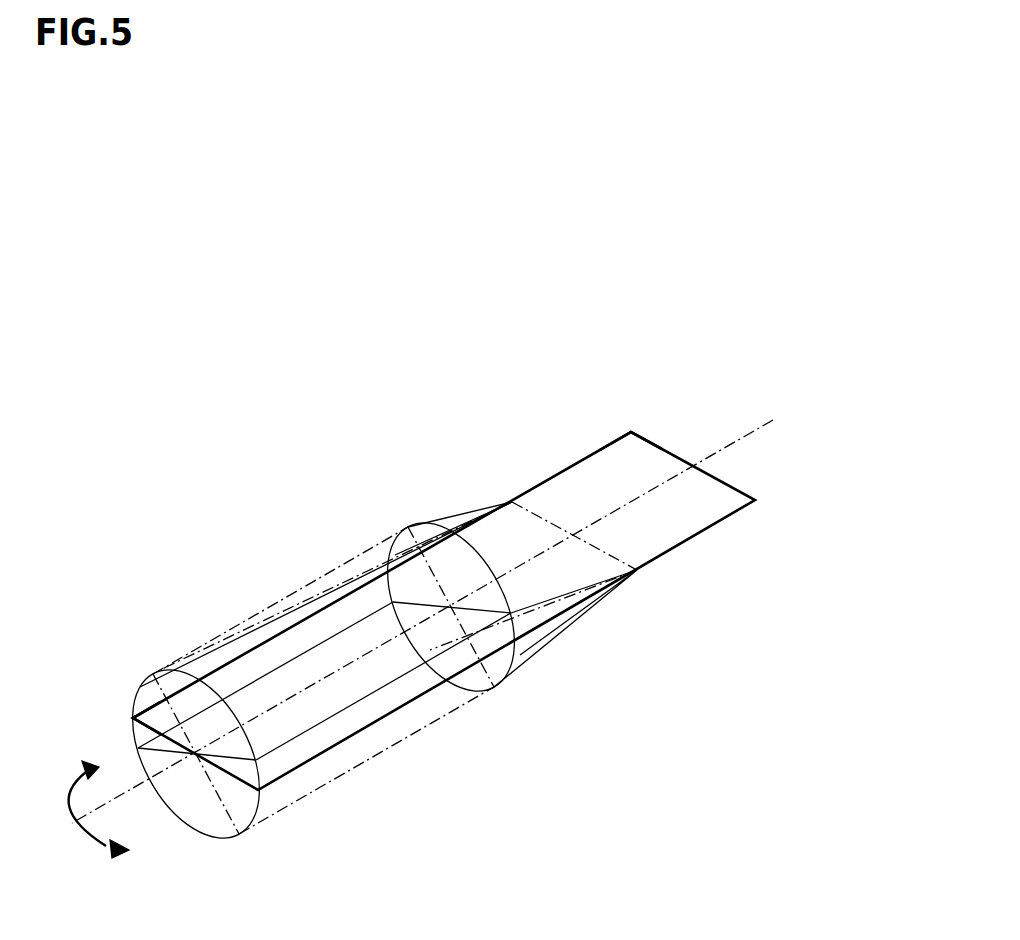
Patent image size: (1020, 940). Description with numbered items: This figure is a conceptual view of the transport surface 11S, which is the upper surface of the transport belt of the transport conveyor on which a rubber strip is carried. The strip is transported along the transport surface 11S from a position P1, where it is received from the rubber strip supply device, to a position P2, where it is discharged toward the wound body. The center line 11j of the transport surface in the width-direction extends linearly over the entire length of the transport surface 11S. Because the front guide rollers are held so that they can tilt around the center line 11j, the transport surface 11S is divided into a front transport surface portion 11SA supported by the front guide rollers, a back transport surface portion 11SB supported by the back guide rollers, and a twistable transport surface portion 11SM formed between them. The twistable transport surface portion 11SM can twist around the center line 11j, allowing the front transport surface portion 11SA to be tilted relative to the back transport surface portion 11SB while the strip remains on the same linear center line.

The transport surface 11S is at (487, 296).
The front transport surface portion 11SA is at (310, 640).
The twistable transport surface portion 11SM is at (497, 542).
The back transport surface portion 11SB is at (590, 480).
The center line of the transport surface 11j is at (743, 438).
The position of receiving P1 is at (632, 428).
The position of discharge P2 is at (130, 717).